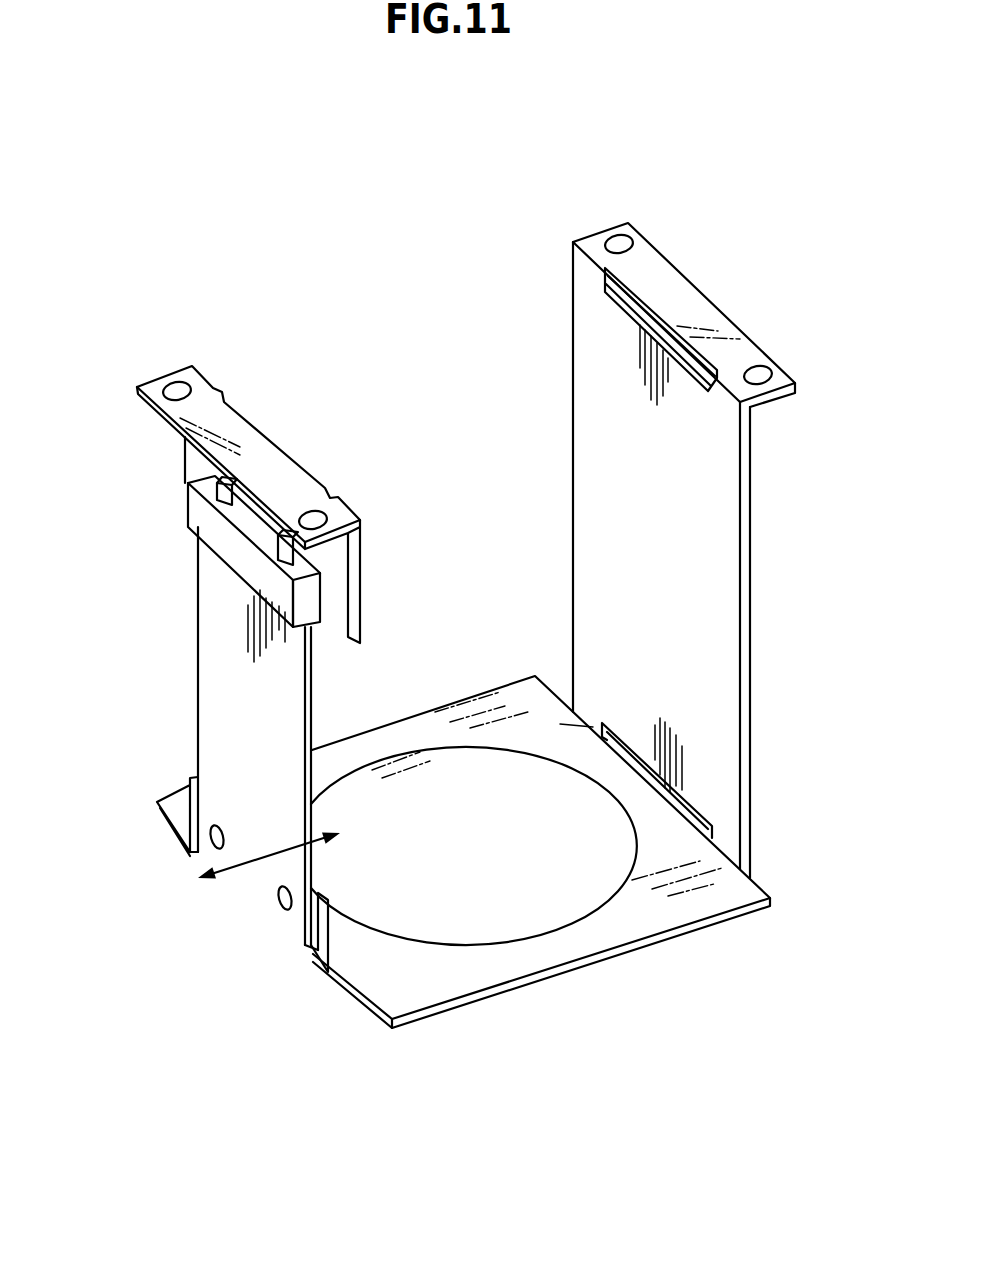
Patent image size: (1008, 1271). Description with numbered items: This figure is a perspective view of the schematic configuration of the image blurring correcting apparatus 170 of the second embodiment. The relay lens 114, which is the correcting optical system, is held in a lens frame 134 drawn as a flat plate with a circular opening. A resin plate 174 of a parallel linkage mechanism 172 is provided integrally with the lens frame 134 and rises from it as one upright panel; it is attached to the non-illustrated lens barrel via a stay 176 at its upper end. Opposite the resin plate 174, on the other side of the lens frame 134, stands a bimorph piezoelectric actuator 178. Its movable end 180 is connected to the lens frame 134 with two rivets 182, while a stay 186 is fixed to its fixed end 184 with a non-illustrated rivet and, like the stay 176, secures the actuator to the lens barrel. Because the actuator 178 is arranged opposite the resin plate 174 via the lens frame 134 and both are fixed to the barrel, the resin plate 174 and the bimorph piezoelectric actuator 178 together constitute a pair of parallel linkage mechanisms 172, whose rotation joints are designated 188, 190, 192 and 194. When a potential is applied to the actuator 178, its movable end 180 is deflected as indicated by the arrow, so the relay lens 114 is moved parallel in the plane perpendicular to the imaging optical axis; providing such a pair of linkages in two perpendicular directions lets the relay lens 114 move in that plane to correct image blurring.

The relay lens 114 is at (533, 907).
The lens frame 134 is at (428, 993).
The holder 170 is at (633, 186).
The parallel linkage mechanism 172 is at (733, 307).
The resin plate 174 is at (713, 538).
The stay 176 is at (668, 295).
The bimorph piezoelectric actuator 178 is at (218, 682).
The movable end 180 is at (253, 880).
The rivets 182 is at (190, 853).
The fixed end 184 is at (252, 528).
The stay 186 is at (260, 467).
The rotation joint 188 is at (603, 270).
The rotation joint 190 is at (728, 853).
The rotation joint 192 is at (190, 852).
The rotation joint 194 is at (213, 378).